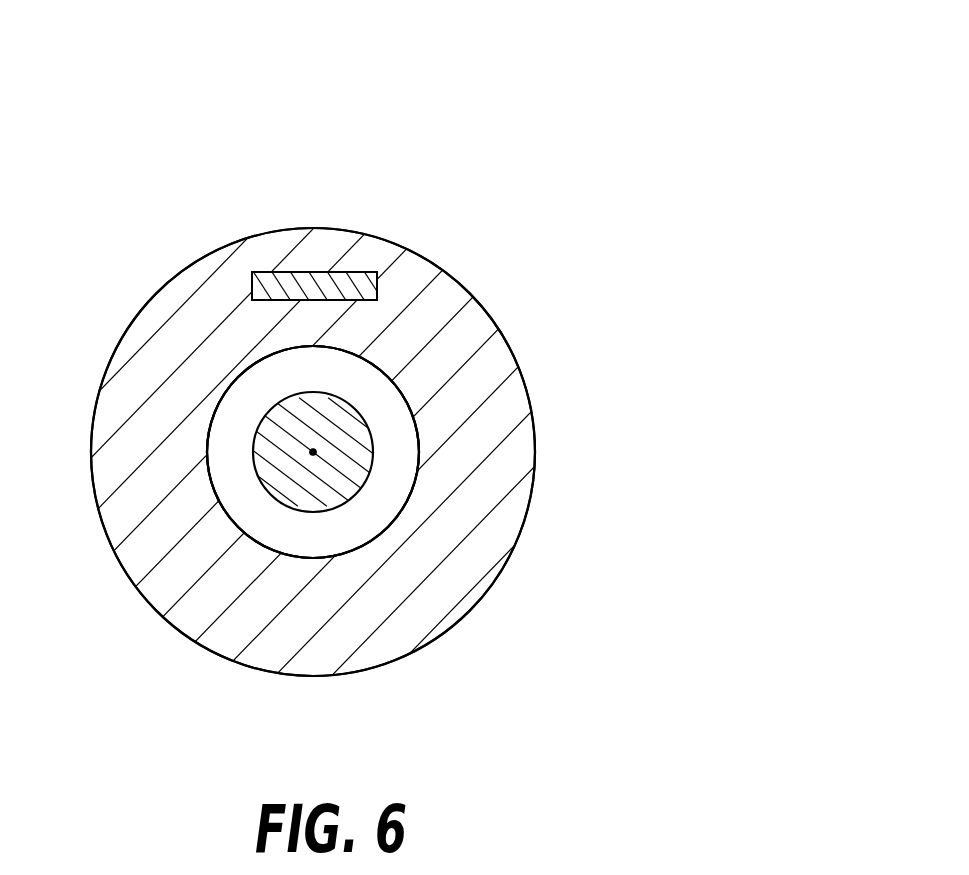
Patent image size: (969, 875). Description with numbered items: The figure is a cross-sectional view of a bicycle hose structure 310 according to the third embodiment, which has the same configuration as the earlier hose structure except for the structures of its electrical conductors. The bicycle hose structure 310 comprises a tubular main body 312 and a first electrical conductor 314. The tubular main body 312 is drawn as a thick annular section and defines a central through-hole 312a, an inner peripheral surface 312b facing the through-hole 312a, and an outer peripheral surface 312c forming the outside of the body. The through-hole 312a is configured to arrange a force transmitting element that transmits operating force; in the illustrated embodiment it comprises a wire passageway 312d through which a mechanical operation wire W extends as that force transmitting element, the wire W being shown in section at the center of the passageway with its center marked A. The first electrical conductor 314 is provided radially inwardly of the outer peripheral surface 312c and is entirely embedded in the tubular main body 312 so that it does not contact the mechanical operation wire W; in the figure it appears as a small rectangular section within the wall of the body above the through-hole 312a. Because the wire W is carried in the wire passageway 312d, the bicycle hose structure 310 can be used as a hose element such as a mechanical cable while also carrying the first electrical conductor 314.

The bicycle hose structure 310 is at (530, 127).
The tubular main body 312 is at (476, 327).
The through-hole 312a is at (395, 427).
The inner peripheral surface 312b is at (425, 494).
The outer peripheral surface 312c is at (517, 363).
The wire passageway 312d is at (340, 382).
The first electrical conductor 314 is at (308, 285).
The mechanical operation wire W is at (282, 470).
The center axis A is at (313, 455).